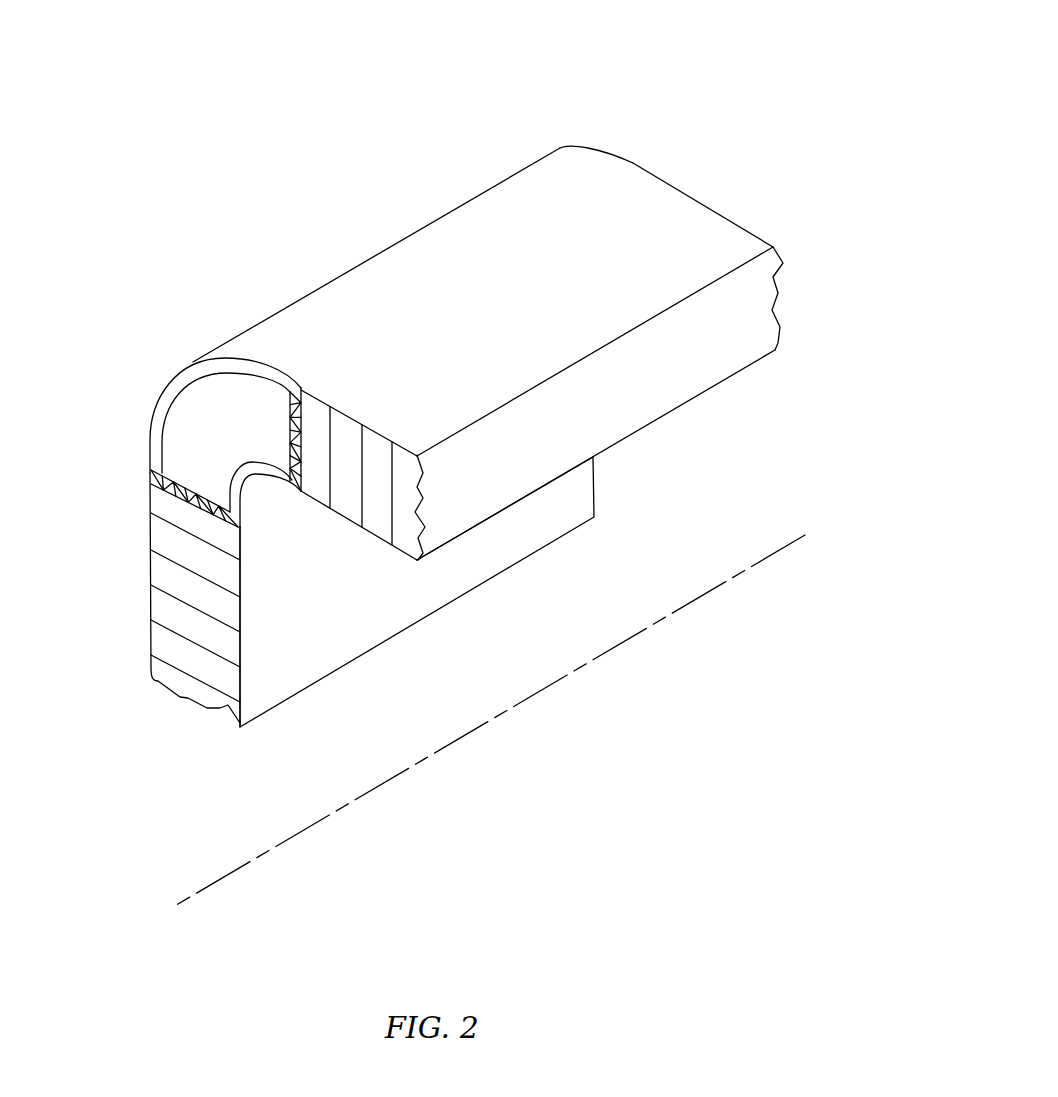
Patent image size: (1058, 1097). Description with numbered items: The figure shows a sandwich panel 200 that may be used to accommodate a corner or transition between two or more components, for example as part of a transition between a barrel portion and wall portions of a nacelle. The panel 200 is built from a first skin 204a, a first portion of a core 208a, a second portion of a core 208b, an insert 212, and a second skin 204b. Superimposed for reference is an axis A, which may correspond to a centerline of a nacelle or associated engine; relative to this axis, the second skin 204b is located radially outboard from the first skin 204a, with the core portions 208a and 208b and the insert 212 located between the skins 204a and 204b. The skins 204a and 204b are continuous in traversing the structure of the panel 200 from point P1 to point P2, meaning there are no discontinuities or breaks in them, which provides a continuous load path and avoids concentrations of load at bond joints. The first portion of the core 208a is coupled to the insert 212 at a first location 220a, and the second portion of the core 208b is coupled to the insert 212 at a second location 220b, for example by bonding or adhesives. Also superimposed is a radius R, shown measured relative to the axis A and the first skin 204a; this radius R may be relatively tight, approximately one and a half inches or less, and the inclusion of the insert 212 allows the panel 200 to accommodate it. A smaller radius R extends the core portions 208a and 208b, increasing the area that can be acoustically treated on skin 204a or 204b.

The sandwich panel 200 is at (650, 88).
The first skin 204a is at (540, 527).
The second skin 204b is at (437, 243).
The first portion of a core 208a is at (172, 575).
The second portion of a core 208b is at (373, 467).
The insert 212 is at (205, 408).
The first location 220a is at (155, 490).
The second location 220b is at (298, 447).
The radius R is at (417, 762).
The point P1 is at (145, 602).
The point P2 is at (507, 353).
The axis A is at (173, 907).